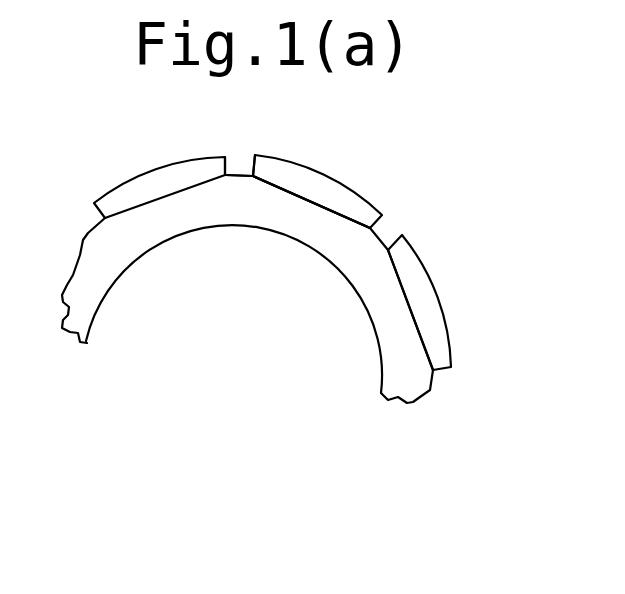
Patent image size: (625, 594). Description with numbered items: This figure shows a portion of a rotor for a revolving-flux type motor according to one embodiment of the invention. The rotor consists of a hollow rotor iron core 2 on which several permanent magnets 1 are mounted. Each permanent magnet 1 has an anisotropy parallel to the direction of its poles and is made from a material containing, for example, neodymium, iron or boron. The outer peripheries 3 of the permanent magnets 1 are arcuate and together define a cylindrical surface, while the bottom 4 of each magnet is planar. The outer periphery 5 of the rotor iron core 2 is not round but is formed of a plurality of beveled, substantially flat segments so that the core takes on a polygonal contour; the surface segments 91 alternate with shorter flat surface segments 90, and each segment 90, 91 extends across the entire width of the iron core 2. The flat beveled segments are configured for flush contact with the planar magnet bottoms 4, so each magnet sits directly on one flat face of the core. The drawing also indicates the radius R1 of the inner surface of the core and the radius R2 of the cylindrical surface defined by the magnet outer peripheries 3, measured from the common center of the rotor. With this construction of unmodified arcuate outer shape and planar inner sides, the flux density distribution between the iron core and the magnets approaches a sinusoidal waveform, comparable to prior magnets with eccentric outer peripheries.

The permanent magnet 1 is at (428, 318).
The rotor iron core 2 is at (407, 372).
The outer periphery of the permanent magnet 3 is at (320, 173).
The bottom of the permanent magnet 4 is at (327, 209).
The outer periphery of the rotor iron core 5 is at (313, 205).
The beveled segment 90 is at (238, 174).
The surface segment 91 is at (413, 315).
The inner radius R1 is at (232, 372).
The outer radius R2 is at (171, 175).